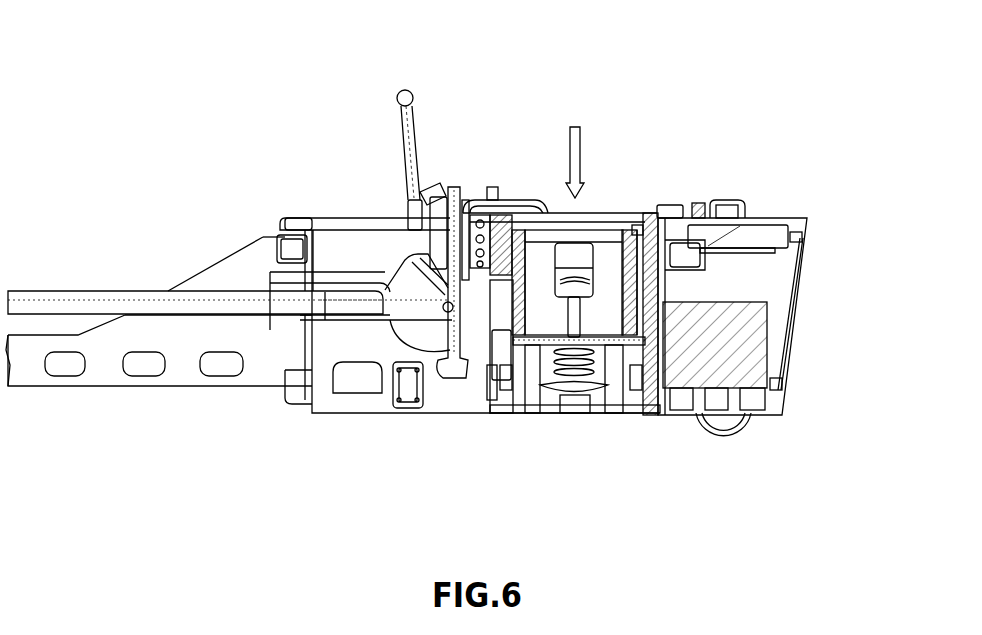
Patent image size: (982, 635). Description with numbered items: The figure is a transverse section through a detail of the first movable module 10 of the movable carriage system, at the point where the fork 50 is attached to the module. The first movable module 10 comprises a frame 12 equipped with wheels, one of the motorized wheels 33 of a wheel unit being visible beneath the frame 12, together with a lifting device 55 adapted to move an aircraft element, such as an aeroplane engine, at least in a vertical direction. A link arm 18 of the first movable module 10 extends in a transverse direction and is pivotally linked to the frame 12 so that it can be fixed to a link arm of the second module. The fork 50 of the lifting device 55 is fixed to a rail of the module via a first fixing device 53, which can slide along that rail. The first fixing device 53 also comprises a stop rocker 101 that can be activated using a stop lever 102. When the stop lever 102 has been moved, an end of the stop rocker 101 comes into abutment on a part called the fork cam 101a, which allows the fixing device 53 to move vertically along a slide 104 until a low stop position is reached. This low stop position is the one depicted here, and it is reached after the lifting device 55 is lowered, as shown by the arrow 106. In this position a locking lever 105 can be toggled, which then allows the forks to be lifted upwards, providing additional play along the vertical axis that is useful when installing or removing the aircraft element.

The first movable module 10 is at (810, 380).
The frame 12 is at (792, 218).
The link arm 18 is at (108, 375).
The motorized wheel 33 is at (733, 438).
The fork 50 is at (68, 302).
The first fixing device 53 is at (402, 308).
The lifting device 55 is at (622, 240).
The stop rocker 101 is at (480, 288).
The fork cam 101a is at (484, 413).
The stop lever 102 is at (391, 99).
The slide 104 is at (454, 374).
The locking lever 105 is at (422, 188).
The arrow 106 is at (585, 148).